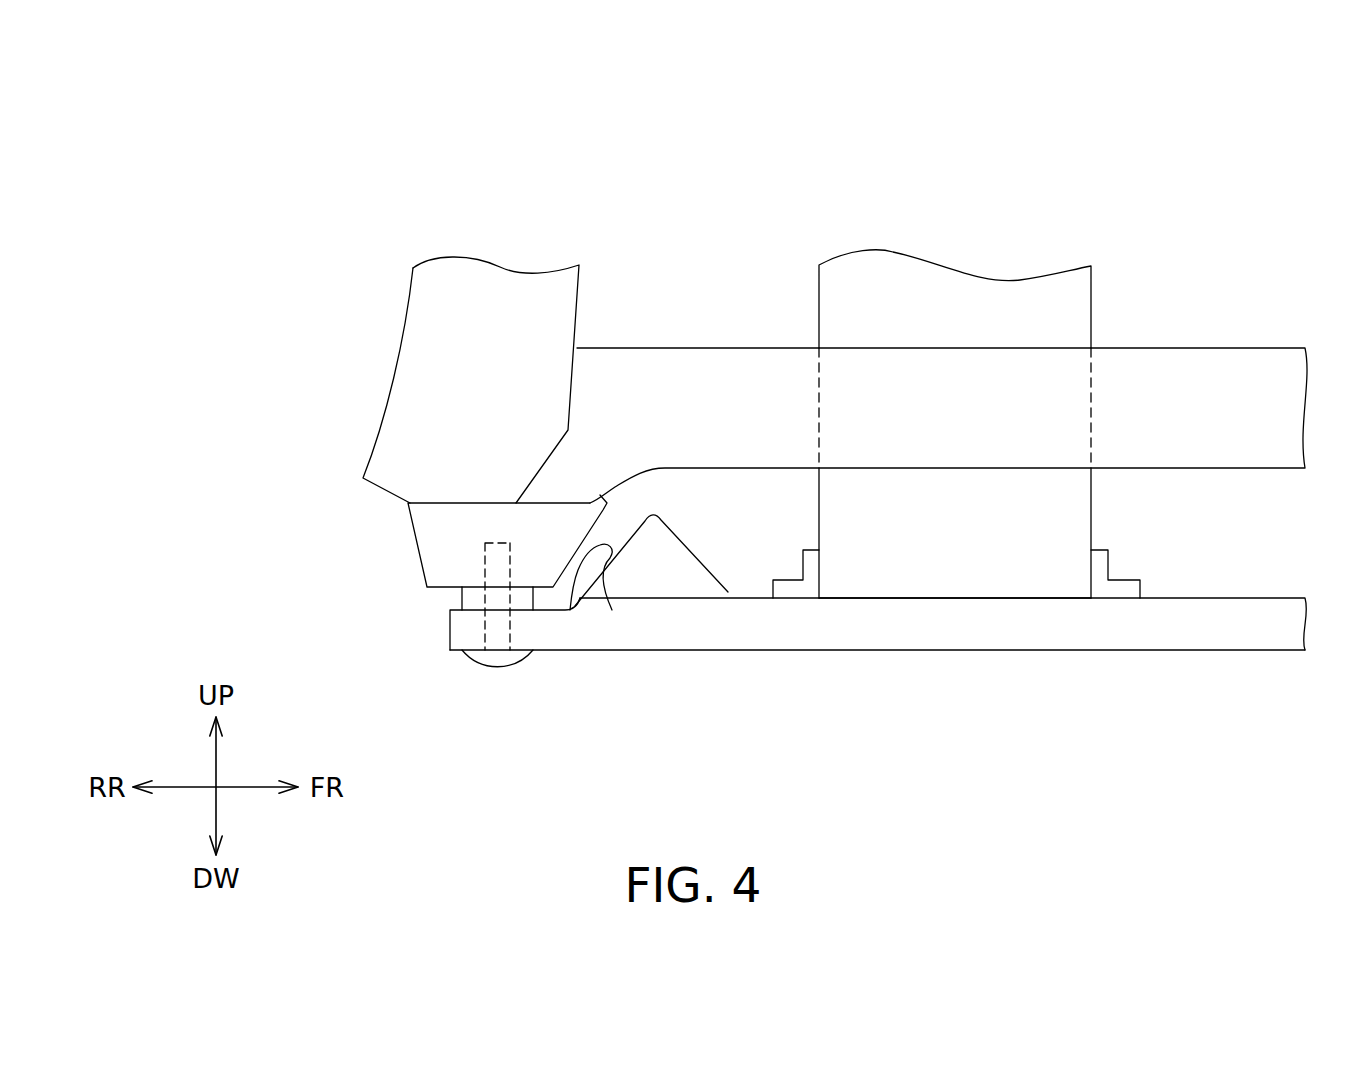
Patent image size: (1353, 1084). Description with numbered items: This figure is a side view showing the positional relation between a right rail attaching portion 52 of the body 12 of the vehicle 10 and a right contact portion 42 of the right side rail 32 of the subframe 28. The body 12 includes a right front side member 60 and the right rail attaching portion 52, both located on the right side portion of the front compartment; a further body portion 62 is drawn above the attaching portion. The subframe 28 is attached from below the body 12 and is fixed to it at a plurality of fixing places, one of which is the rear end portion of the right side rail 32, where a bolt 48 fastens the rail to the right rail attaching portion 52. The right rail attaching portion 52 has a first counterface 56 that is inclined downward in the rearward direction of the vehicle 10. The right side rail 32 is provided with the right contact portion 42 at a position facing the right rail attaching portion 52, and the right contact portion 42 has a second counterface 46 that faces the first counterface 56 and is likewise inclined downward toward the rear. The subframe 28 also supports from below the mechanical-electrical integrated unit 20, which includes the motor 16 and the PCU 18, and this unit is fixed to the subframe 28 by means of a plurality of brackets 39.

The vehicle 10 is at (413, 157).
The body 12 is at (1198, 273).
The motor 16 is at (955, 656).
The PCU 18 is at (938, 591).
The mechanical-electrical integrated unit 20 is at (955, 681).
The subframe 28 is at (1217, 666).
The right side rail 32 is at (760, 633).
The brackets 39 is at (797, 591).
The right contact portion 42 is at (667, 585).
The second counterface 46 is at (612, 612).
The bolt 48 is at (480, 630).
The right rail attaching portion 52 is at (427, 545).
The first counterface 56 is at (570, 612).
The right front side member 60 is at (1256, 362).
The upper member 62 is at (495, 281).